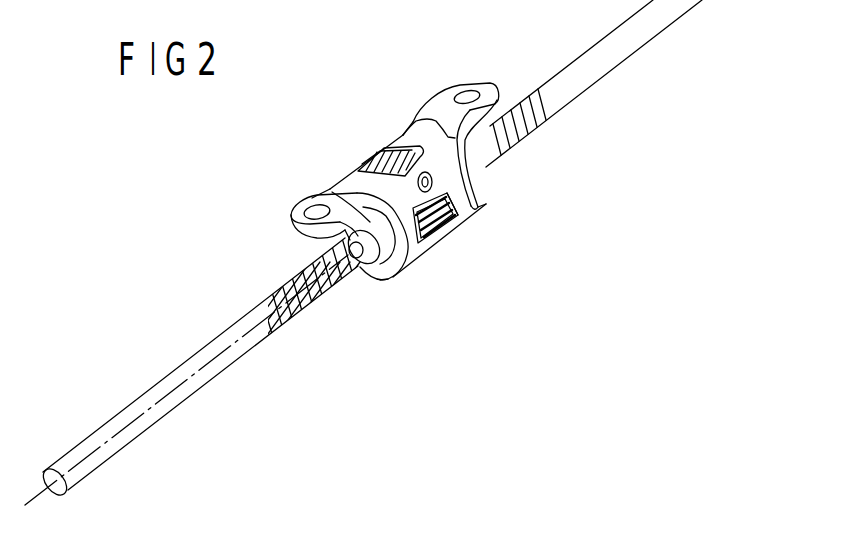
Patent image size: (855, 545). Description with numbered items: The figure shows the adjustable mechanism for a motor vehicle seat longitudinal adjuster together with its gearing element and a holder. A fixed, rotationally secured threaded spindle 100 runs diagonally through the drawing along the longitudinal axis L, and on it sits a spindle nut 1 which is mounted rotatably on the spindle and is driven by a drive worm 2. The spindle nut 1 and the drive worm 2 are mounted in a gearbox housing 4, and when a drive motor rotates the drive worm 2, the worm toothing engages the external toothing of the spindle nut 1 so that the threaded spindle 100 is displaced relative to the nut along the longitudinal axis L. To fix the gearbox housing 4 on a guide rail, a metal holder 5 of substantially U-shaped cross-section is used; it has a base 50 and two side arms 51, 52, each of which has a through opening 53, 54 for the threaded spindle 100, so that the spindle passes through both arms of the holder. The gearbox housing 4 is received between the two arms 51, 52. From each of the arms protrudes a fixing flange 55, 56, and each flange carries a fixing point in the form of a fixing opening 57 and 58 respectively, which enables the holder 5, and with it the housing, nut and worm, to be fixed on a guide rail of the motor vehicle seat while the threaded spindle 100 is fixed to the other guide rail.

The threaded spindle 100 is at (195, 392).
The longitudinal axis L is at (147, 412).
The holder 5 is at (323, 250).
The spindle nut 1 is at (435, 233).
The drive worm 2 is at (386, 157).
The gearbox housing 4 is at (462, 200).
The base 50 is at (452, 235).
The side arm 51 is at (386, 272).
The side arm 52 is at (477, 192).
The through opening 53 is at (373, 268).
The through opening 54 is at (477, 168).
The fixing flange 55 is at (322, 192).
The fixing flange 56 is at (443, 110).
The fixing opening 57 is at (291, 212).
The fixing opening 58 is at (470, 97).